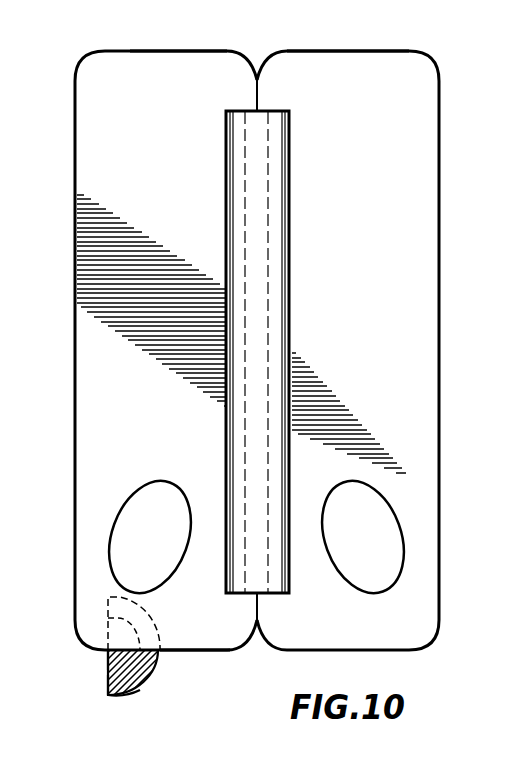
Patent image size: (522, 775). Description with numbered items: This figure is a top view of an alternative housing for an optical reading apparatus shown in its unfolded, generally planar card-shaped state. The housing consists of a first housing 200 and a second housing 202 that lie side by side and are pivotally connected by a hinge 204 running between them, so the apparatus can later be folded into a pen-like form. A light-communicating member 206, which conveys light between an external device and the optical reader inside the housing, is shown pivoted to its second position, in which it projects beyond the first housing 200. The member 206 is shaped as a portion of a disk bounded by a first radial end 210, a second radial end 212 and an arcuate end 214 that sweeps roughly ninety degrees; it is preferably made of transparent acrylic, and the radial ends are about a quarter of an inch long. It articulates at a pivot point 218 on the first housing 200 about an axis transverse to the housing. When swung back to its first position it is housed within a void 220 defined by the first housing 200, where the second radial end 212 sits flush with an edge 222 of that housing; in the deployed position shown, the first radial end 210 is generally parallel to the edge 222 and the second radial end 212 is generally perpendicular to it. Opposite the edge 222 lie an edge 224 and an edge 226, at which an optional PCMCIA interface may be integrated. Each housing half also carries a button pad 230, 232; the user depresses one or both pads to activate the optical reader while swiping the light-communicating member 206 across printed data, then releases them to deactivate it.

The first housing 200 is at (75, 121).
The second housing 202 is at (440, 122).
The hinge 204 is at (240, 152).
The light-communicating member 206 is at (157, 666).
The first radial end 210 is at (108, 614).
The second radial end 212 is at (108, 694).
The arcuate end 214 is at (136, 690).
The pivot point 218 is at (108, 646).
The void 220 is at (116, 573).
The edge 222 is at (197, 652).
The edge 224 is at (405, 50).
The edge 226 is at (157, 50).
The button pad 230 is at (121, 503).
The button pad 232 is at (408, 558).